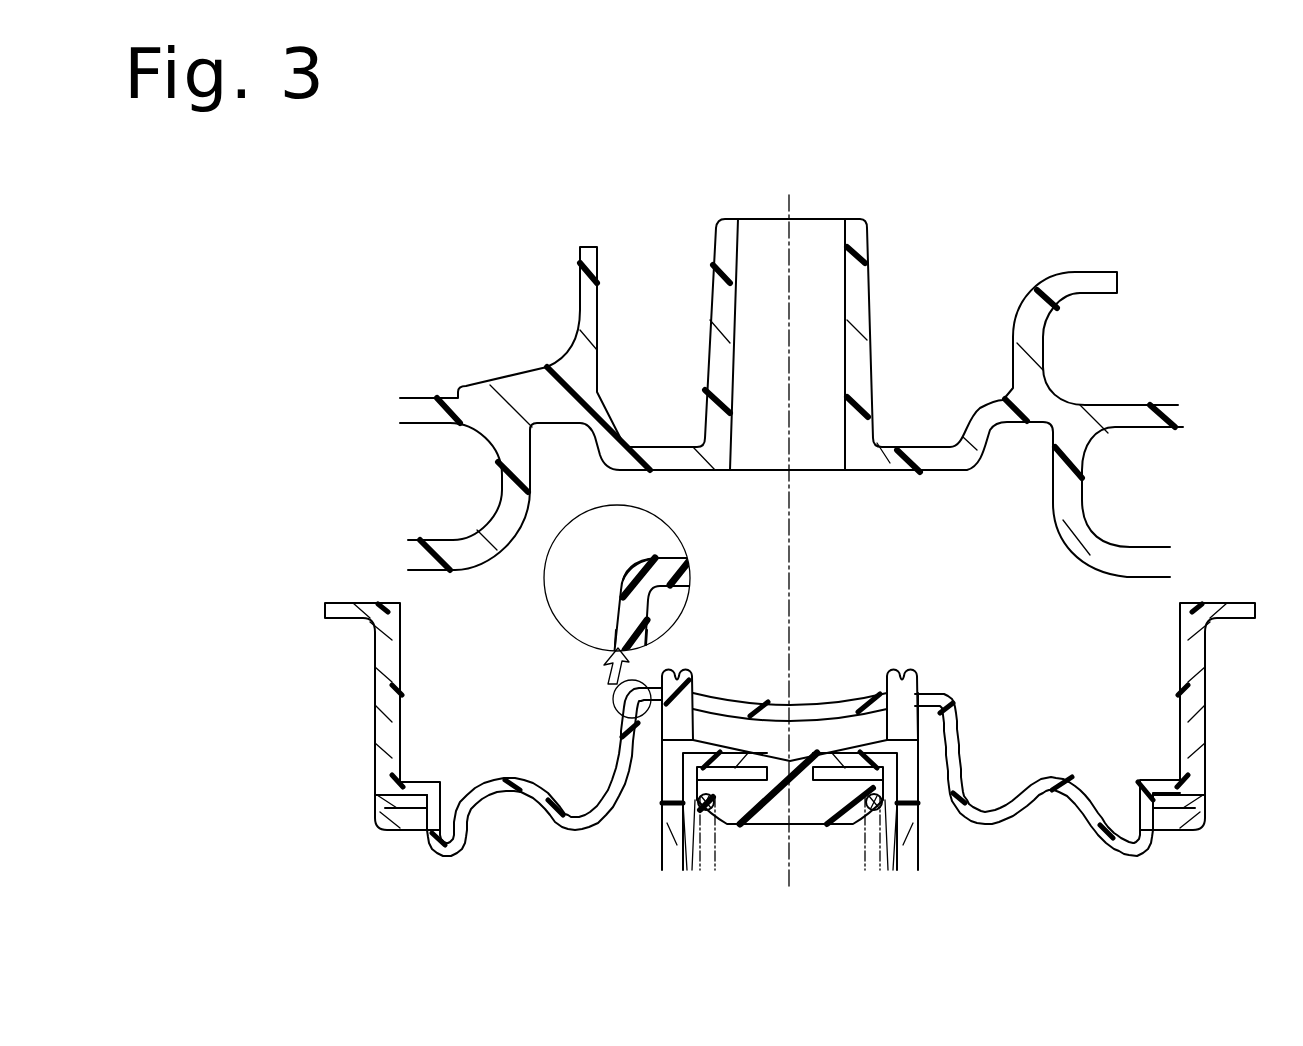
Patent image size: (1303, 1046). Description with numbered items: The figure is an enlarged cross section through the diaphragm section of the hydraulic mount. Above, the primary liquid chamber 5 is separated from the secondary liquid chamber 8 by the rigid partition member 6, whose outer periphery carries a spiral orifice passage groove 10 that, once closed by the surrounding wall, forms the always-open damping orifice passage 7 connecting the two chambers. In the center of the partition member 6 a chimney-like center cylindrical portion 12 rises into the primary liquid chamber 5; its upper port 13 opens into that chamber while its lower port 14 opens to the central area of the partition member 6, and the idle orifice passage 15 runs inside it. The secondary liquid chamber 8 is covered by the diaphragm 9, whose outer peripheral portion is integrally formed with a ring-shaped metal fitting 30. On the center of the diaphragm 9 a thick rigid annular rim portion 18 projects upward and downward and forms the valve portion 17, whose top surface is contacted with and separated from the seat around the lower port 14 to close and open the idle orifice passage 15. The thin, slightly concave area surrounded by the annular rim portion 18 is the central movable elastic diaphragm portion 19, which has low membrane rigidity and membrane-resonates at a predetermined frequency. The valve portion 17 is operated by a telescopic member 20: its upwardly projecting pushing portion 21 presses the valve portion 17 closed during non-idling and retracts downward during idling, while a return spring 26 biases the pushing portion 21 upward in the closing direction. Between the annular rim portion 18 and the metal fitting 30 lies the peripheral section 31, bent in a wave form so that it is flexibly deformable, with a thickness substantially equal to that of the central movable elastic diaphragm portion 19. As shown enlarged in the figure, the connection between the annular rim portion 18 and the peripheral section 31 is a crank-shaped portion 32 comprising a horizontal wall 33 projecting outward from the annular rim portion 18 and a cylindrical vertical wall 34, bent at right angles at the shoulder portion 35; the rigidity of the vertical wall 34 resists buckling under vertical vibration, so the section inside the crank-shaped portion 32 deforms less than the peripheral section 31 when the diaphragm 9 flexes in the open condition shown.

The primary liquid chamber 5 is at (648, 202).
The partition member 6 is at (542, 356).
The damping orifice passage 7 is at (410, 492).
The secondary liquid chamber 8 is at (937, 563).
The diaphragm 9 is at (1066, 760).
The orifice passage groove 10 is at (1043, 356).
The center cylindrical portion 12 is at (860, 281).
The upper port 13 is at (795, 215).
The lower port 14 is at (772, 475).
The idle orifice passage 15 is at (826, 352).
The valve portion 17 is at (748, 688).
The annular rim portion 18 is at (905, 715).
The central movable elastic diaphragm portion 19 is at (820, 692).
The telescopic member 20 is at (648, 840).
The pushing portion 21 is at (810, 818).
The return spring 26 is at (715, 850).
The metal fitting 30 is at (375, 692).
The peripheral section 31 is at (562, 822).
The crank-shaped portion 32 is at (612, 700).
The horizontal wall 33 is at (676, 567).
The vertical wall 34 is at (620, 628).
The shoulder portion 35 is at (625, 571).